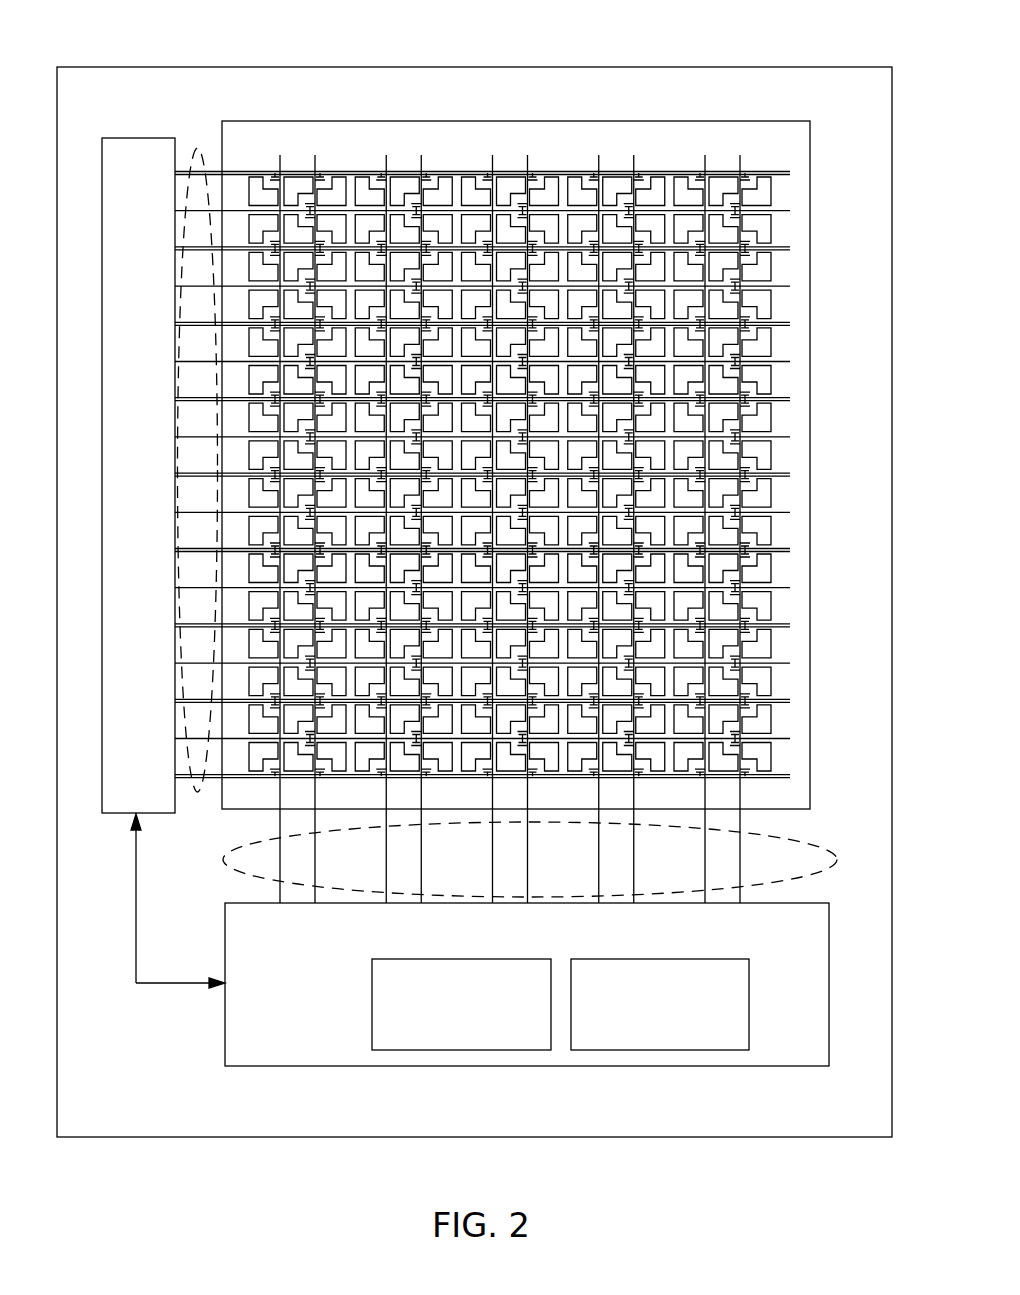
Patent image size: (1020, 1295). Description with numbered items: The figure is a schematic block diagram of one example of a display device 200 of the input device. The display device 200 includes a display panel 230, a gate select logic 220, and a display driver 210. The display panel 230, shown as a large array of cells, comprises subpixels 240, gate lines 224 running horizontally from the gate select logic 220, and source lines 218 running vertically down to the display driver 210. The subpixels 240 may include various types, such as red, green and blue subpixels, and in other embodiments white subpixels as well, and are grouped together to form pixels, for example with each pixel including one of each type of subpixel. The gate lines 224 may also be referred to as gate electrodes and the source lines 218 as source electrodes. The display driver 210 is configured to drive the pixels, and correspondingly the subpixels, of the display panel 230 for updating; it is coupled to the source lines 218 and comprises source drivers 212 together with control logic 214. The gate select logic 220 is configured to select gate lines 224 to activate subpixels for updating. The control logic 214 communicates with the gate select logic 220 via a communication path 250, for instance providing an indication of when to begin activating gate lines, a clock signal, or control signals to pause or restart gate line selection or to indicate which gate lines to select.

The display device 200 is at (115, 97).
The display driver 210 is at (445, 940).
The source drivers 212 is at (479, 1031).
The control logic 214 is at (678, 1031).
The source lines 218 is at (816, 848).
The gate select logic 220 is at (138, 475).
The gate lines 224 is at (200, 795).
The display panel 230 is at (269, 148).
The subpixels 240 is at (763, 192).
The communication path 250 is at (152, 985).